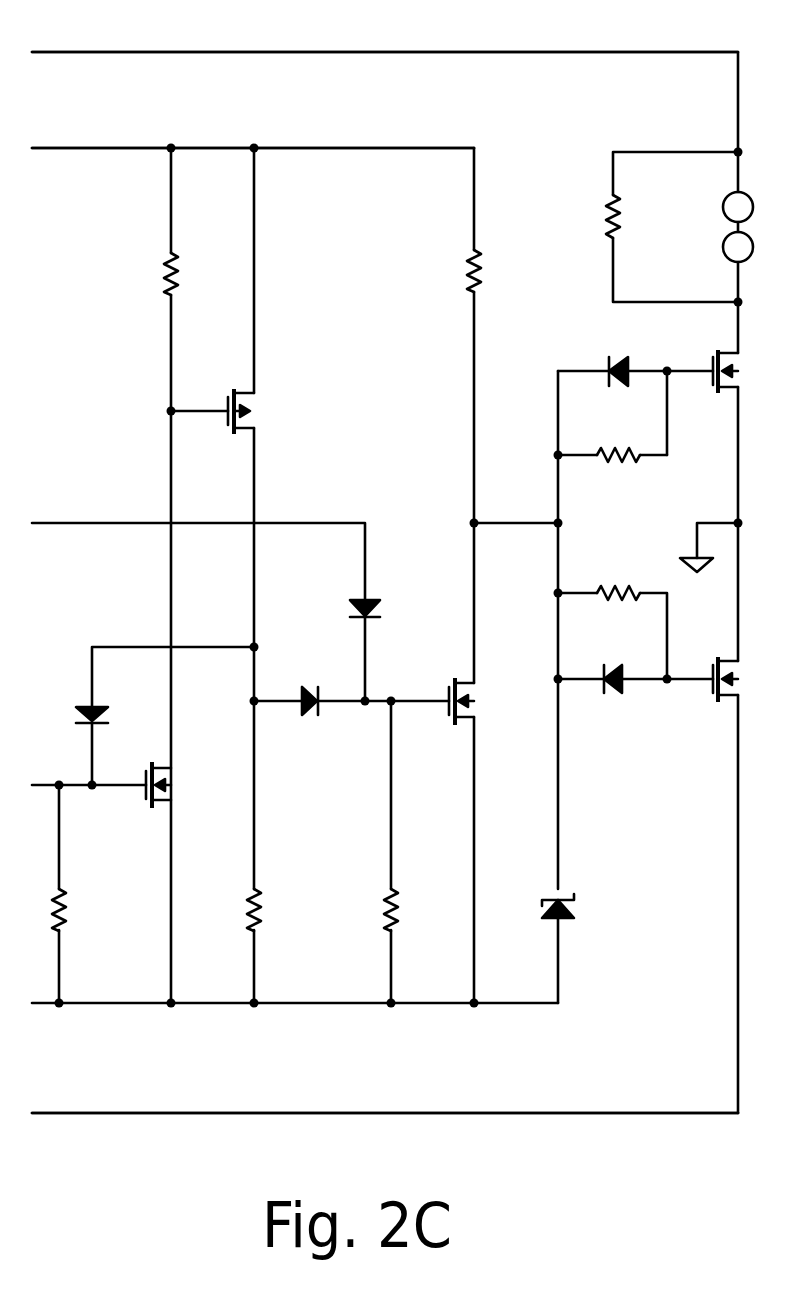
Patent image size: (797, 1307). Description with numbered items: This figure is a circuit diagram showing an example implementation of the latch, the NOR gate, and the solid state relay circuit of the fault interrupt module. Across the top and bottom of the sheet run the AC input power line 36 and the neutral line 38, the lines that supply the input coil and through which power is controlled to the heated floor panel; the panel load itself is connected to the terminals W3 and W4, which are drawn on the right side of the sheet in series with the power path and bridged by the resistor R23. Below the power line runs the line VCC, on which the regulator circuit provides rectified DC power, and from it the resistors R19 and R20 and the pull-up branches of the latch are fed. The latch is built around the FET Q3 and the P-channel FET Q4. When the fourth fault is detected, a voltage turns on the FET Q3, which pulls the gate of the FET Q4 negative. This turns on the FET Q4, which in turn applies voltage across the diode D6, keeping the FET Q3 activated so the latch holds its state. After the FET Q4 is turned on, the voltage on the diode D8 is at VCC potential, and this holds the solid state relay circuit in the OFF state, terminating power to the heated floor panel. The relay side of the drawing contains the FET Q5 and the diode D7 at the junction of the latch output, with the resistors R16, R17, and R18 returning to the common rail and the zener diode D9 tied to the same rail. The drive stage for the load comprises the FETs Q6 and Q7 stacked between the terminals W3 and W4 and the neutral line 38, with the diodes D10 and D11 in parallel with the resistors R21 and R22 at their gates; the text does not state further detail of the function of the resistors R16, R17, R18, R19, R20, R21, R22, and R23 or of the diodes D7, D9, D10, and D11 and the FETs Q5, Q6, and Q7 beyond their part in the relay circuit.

The AC input power line 36 is at (467, 52).
The neutral line 38 is at (395, 1113).
The line VCC is at (290, 148).
The resistor R16 is at (83, 910).
The resistor R17 is at (280, 910).
The resistor R18 is at (412, 910).
The resistor R19 is at (143, 274).
The resistor R20 is at (500, 271).
The resistor R21 is at (618, 440).
The resistor R22 is at (616, 579).
The resistor R23 is at (589, 216).
The diode D6 is at (73, 719).
The zener diode D7 is at (347, 608).
The diode D8 is at (312, 717).
The zener diode D9 is at (584, 908).
The diode D10 is at (615, 358).
The diode D11 is at (610, 696).
The FET Q3 is at (180, 785).
The FET Q4 is at (259, 411).
The transistor Q5 is at (480, 701).
The transistor Q6 is at (720, 390).
The transistor Q7 is at (720, 697).
The terminal W3 is at (718, 187).
The terminal W4 is at (718, 262).